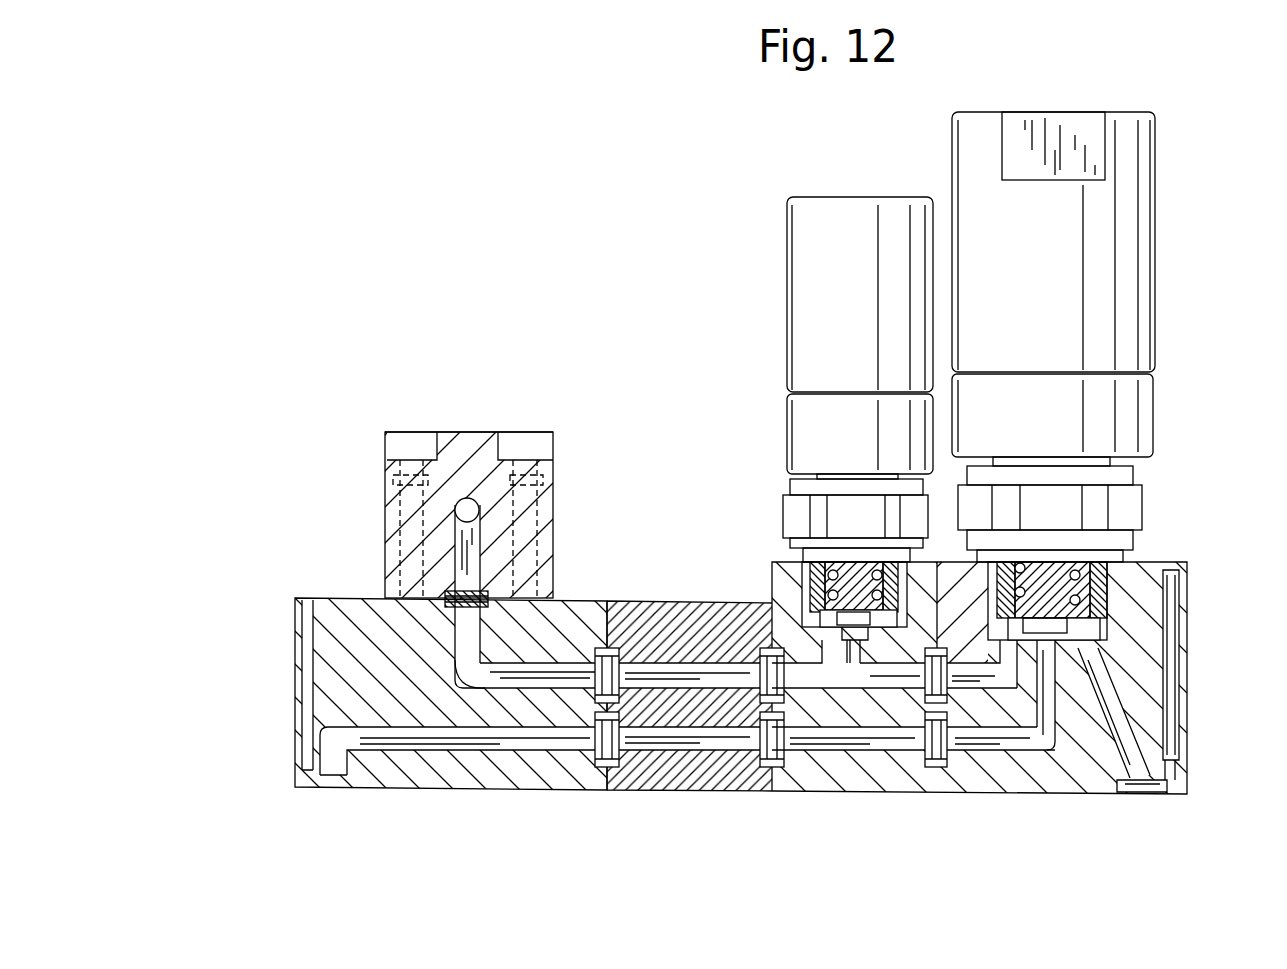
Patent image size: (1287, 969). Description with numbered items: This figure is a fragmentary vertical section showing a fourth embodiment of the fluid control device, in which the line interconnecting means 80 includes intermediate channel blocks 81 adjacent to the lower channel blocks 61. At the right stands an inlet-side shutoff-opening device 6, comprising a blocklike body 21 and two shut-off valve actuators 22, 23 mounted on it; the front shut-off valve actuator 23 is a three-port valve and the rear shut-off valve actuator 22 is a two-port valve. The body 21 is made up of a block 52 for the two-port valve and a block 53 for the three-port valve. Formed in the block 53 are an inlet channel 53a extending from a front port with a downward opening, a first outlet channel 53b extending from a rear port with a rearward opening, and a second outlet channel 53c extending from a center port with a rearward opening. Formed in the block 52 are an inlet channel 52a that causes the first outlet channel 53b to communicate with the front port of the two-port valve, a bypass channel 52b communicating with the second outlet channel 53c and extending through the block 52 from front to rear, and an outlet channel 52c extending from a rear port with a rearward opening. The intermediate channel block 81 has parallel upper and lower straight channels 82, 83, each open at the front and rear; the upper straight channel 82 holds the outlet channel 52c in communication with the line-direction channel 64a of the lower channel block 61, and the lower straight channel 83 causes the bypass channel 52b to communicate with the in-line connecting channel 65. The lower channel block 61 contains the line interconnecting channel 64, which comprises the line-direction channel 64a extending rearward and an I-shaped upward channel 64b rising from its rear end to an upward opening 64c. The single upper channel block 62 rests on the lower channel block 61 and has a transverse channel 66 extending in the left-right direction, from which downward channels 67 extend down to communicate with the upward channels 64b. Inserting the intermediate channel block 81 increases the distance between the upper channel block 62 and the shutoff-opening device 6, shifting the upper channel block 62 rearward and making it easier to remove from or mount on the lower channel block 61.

The inlet-side shutoff-opening device 6 is at (1158, 399).
The body 21 is at (1013, 794).
The rear shut-off valve actuator 22 is at (803, 250).
The front shut-off valve actuator 23 is at (1128, 250).
The 2-port valve block 52 is at (822, 791).
The inlet channel 52a is at (872, 692).
The bypass channel 52b is at (805, 750).
The outlet channel 52c is at (808, 668).
The 3-port valve block 53 is at (1095, 791).
The inlet channel 53a is at (1122, 735).
The first outlet channel 53b is at (977, 695).
The second outlet channel 53c is at (1033, 758).
The lower channel block 61 is at (335, 625).
The upper channel block 62 is at (447, 437).
The line interconnecting channel 64 is at (492, 690).
The line-direction channel 64a is at (543, 690).
The upward channel 64b is at (458, 660).
The upward opening 64c is at (452, 602).
The in-line connecting channel 65 is at (378, 745).
The transverse channel 66 is at (478, 506).
The downward channel 67 is at (482, 541).
The line interconnecting means 80 is at (348, 452).
The intermediate channel block 81 is at (687, 615).
The upper straight channel 82 is at (655, 685).
The lower straight channel 83 is at (712, 750).